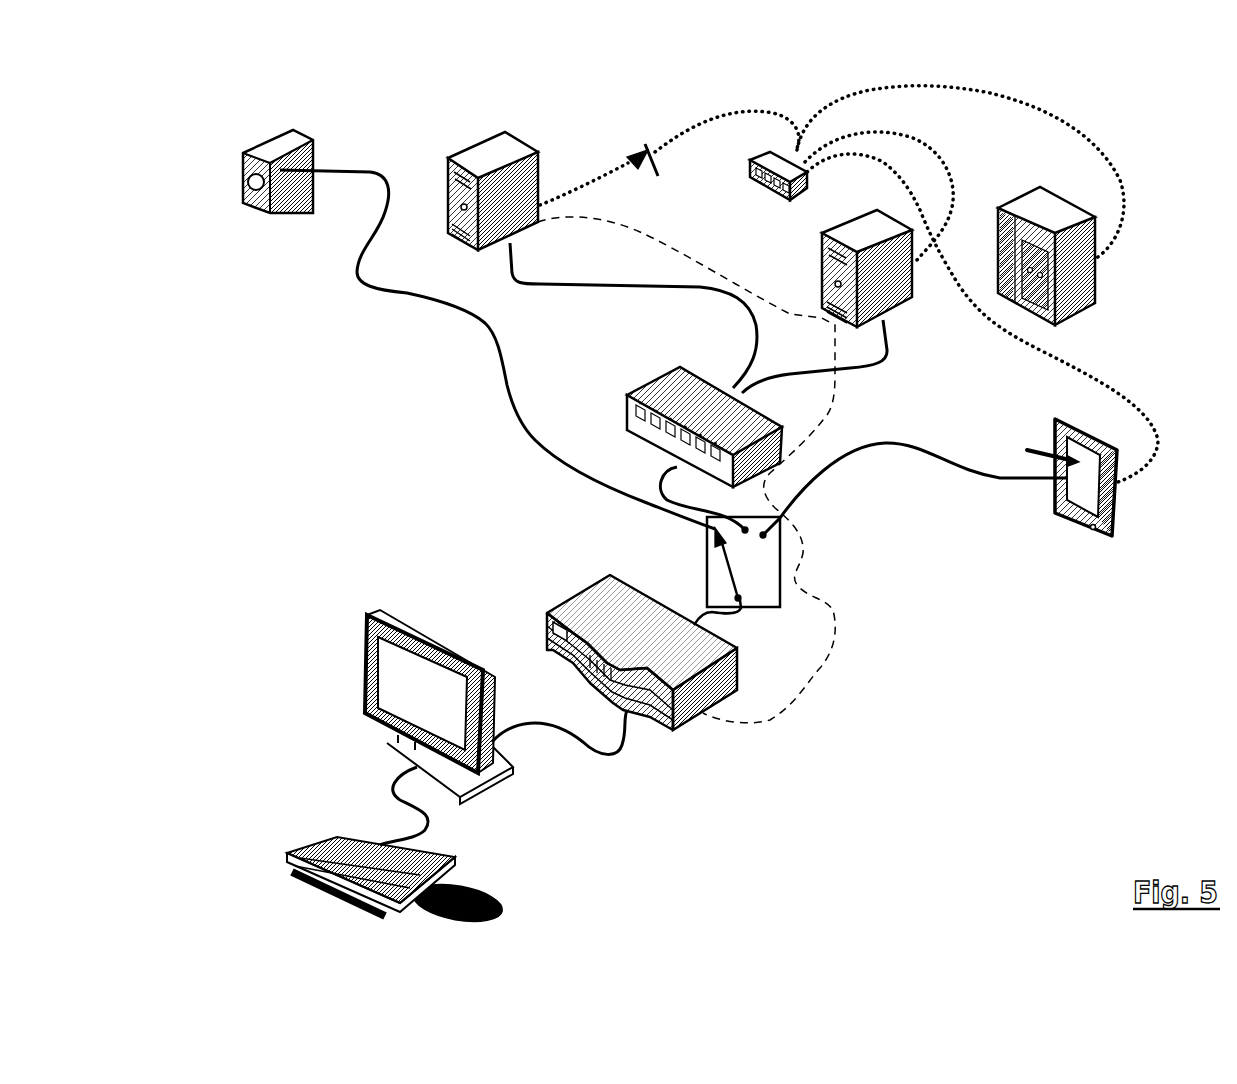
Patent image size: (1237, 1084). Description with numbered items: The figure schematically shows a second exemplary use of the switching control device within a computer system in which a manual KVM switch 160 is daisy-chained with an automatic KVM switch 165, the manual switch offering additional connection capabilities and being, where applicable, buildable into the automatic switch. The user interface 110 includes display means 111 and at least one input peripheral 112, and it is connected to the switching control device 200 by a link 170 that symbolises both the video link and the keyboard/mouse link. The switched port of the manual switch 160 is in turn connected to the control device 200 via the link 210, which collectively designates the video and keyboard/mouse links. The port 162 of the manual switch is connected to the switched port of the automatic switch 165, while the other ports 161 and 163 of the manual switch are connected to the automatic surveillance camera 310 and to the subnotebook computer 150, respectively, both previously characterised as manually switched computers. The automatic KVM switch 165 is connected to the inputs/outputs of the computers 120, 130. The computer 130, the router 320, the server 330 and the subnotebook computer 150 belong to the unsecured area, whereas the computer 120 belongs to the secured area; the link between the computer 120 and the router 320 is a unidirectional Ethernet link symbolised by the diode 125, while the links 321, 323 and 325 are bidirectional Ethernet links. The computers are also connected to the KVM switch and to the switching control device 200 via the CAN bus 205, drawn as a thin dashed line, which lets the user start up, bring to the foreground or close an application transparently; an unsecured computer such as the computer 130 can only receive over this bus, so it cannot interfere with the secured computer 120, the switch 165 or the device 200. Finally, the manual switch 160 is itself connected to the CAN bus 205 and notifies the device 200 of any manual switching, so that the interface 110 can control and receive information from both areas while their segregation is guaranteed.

The user interface 110 is at (265, 590).
The display means 111 is at (380, 612).
The input peripheral 112 is at (457, 862).
The computer 120 is at (476, 150).
The diode 125 is at (650, 152).
The computer 130 is at (822, 265).
The subnotebook computer 150 is at (1117, 542).
The manual KVM switch 160 is at (706, 571).
The port 161 is at (764, 536).
The port 162 is at (727, 548).
The port 163 is at (744, 541).
The automatic KVM switch 165 is at (642, 391).
The link 170 is at (557, 728).
The switching control device 200 is at (556, 602).
The CAN bus 205 is at (812, 674).
The link 210 is at (714, 618).
The automatic surveillance camera 310 is at (241, 192).
The router 320 is at (750, 168).
The bidirectional Ethernet link 321 is at (907, 134).
The bidirectional Ethernet link 323 is at (1077, 126).
The bidirectional Ethernet link 325 is at (1138, 414).
The server 330 is at (1075, 310).